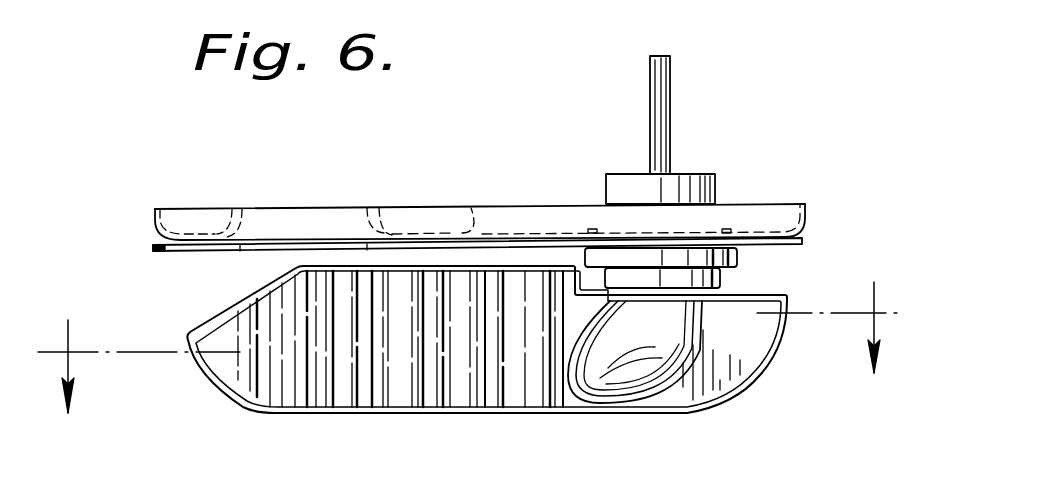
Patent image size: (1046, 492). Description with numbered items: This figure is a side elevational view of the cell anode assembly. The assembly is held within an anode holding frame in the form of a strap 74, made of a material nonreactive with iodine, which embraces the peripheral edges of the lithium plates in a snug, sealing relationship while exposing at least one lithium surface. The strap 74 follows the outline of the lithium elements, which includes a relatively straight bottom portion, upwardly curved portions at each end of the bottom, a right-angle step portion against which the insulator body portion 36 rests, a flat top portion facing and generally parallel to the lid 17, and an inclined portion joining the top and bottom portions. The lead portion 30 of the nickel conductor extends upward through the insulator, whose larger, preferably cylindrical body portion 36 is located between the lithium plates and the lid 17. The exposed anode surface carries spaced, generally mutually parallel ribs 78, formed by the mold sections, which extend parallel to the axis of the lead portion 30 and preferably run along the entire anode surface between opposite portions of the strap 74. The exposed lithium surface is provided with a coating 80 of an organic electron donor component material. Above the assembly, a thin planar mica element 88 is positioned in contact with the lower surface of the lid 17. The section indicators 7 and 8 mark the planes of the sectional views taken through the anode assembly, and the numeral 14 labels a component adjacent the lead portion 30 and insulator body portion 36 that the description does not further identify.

The section line 7- 7 is at (474, 336).
The section line 8- 8 is at (470, 481).
The hub 14 is at (737, 256).
The lid 17 is at (467, 210).
The lead portion 30 is at (662, 80).
The insulator body portion 36 is at (720, 278).
The strap 74 is at (219, 384).
The ribs 78 is at (250, 387).
The coating 80 is at (278, 392).
The mica element 88 is at (153, 248).